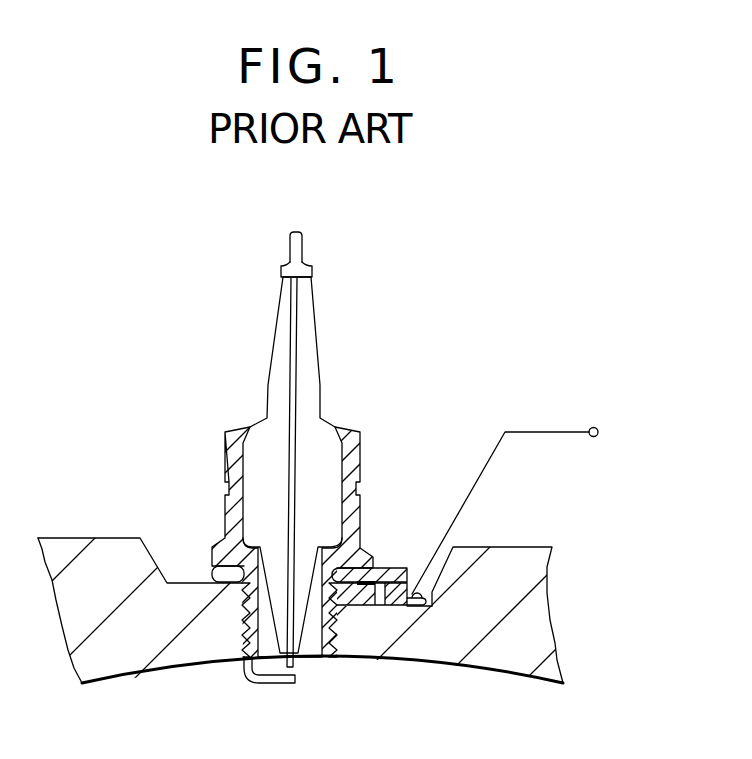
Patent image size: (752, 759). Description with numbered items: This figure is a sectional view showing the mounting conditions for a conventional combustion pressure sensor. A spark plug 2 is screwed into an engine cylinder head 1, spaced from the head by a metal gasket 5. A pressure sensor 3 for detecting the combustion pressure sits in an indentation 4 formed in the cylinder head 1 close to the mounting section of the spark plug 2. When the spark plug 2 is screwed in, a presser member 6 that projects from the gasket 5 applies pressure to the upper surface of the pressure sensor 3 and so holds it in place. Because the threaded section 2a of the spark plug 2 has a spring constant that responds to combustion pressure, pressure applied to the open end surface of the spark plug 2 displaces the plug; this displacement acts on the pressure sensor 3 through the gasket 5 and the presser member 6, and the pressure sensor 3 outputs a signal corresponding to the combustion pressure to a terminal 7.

The engine cylinder head 1 is at (516, 546).
The spark plug 2 is at (316, 410).
The threaded section 2a is at (242, 656).
The pressure sensor 3 is at (392, 607).
The indentation 4 is at (431, 608).
The metal gasket 5 is at (213, 570).
The presser member 6 is at (391, 568).
The terminal 7 is at (593, 427).